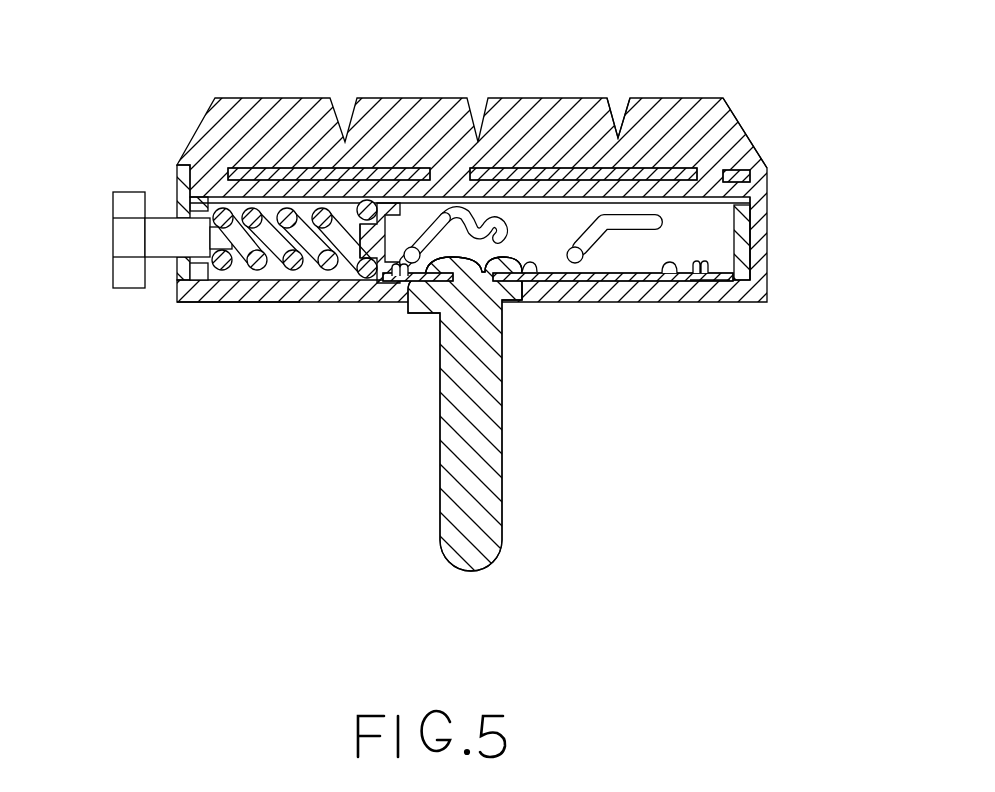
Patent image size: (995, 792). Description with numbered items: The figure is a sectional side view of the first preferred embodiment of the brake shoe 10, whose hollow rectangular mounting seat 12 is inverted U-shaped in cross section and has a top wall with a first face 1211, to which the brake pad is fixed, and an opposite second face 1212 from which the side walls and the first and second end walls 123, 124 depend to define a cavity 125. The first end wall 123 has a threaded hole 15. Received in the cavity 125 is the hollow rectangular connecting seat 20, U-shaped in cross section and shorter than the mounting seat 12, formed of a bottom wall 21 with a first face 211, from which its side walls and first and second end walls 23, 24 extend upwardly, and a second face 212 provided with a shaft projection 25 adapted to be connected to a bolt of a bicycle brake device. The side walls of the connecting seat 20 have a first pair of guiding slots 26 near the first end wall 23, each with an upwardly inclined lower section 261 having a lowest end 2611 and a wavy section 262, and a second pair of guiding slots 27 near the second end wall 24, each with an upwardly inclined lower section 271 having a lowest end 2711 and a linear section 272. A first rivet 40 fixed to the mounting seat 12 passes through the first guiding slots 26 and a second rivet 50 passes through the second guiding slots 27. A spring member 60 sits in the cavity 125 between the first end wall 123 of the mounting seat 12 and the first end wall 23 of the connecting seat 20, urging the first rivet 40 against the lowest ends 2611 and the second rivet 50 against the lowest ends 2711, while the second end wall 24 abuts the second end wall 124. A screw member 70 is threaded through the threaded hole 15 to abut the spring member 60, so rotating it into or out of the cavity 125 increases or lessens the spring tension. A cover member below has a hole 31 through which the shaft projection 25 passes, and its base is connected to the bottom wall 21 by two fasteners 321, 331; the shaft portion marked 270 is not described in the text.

The brake shoe 10 is at (746, 105).
The mounting seat 12 is at (180, 302).
The threaded hole 15 is at (175, 260).
The connecting seat 20 is at (755, 243).
The bottom wall 21 is at (728, 283).
The first end wall 23 is at (393, 167).
The second end wall 24 is at (762, 185).
The shaft projection 25 is at (505, 535).
The first pair of guiding slots 26 is at (425, 225).
The second pair of guiding slots 27 is at (633, 228).
The hole 31 is at (530, 307).
The first rivet 40 is at (372, 300).
The second rivet 50 is at (575, 288).
The spring member 60 is at (178, 168).
The screw member 70 is at (113, 241).
The first end wall 123 is at (178, 178).
The second end wall 124 is at (758, 210).
The cavity 125 is at (253, 302).
The first face 211 is at (670, 283).
The second face 212 is at (647, 285).
The first upwardly inclined lower section 261 is at (435, 290).
The wavy section 262 is at (455, 222).
The shaft head lobe 270 is at (538, 320).
The second upwardly inclined lower section 271 is at (583, 235).
The linear section 272 is at (605, 162).
The fastener 321 is at (345, 292).
The fastener 331 is at (697, 283).
The first face 1211 is at (655, 158).
The second face 1212 is at (736, 250).
The lowest end 2611 is at (407, 290).
The lowest end 2711 is at (543, 325).